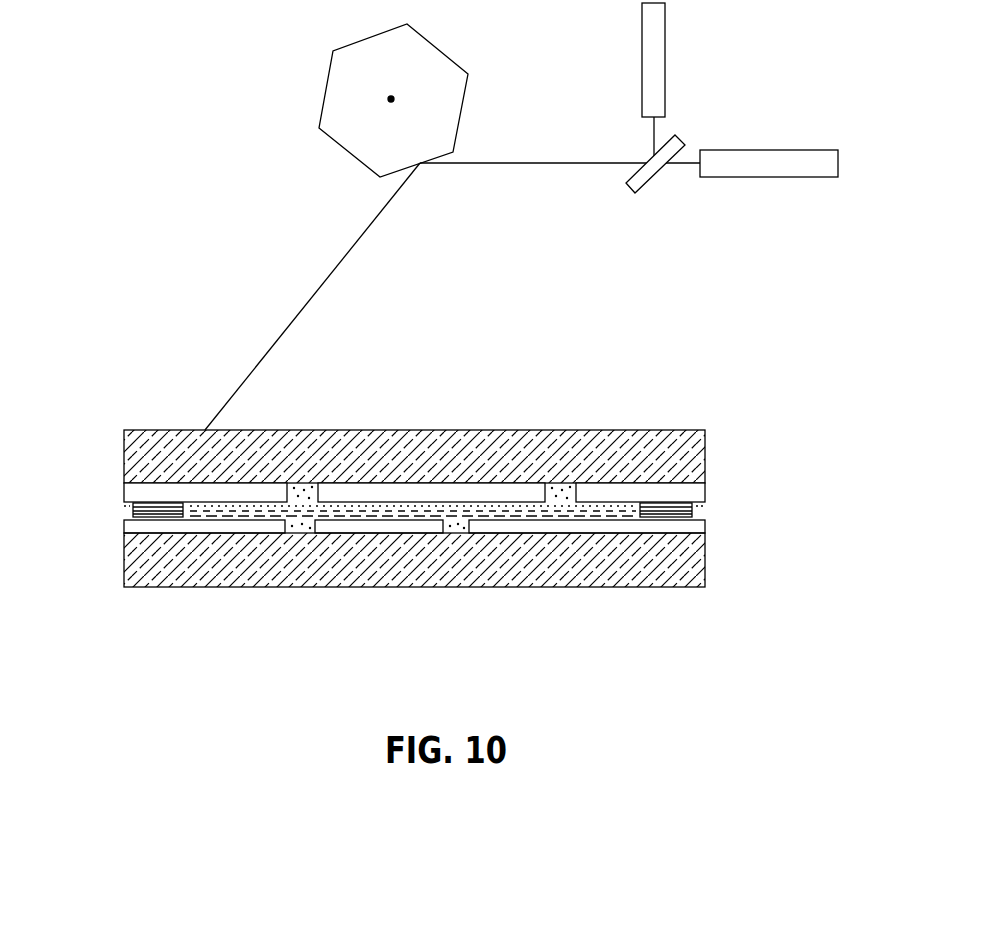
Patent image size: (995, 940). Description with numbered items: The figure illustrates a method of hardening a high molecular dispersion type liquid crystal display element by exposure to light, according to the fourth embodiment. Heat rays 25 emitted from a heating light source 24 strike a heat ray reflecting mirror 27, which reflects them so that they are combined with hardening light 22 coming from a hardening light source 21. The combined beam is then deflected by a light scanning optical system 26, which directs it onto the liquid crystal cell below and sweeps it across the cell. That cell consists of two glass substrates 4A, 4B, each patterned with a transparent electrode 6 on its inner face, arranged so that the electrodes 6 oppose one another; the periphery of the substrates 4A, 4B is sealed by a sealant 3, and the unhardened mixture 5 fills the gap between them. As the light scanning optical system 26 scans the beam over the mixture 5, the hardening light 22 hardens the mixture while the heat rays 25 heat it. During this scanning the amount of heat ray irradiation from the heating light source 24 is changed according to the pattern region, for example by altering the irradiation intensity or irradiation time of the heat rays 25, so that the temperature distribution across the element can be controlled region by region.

The sealant 3 is at (693, 510).
The glass substrate 4A is at (627, 465).
The glass substrate 4B is at (642, 558).
The unhardened mixture 5 is at (462, 520).
The transparent electrode 6 is at (124, 518).
The hardening light source 21 is at (765, 165).
The hardening light 22 is at (678, 165).
The heating light source 24 is at (656, 50).
The heat rays 25 is at (650, 147).
The light scanning optical system 26 is at (322, 100).
The heat ray reflecting mirror 27 is at (645, 185).